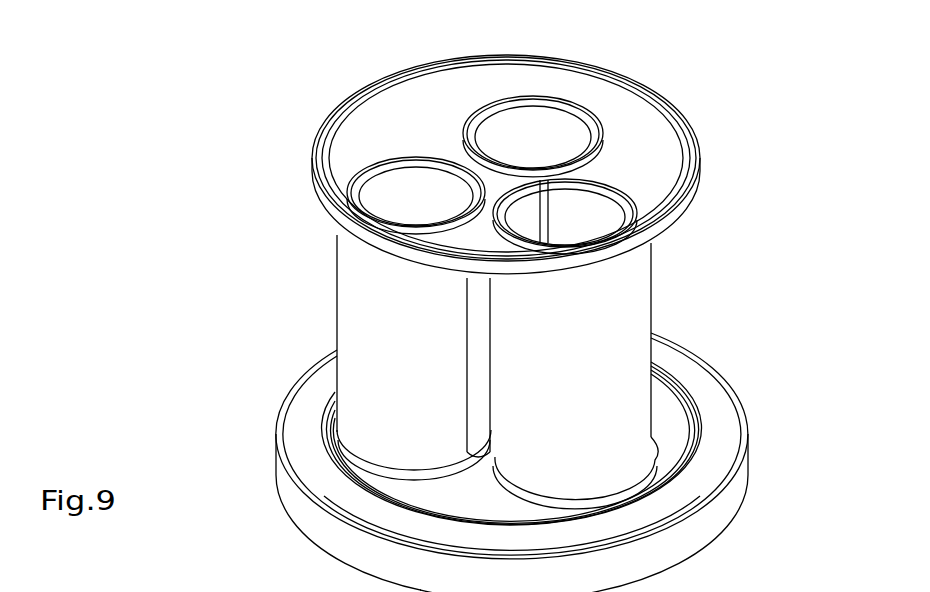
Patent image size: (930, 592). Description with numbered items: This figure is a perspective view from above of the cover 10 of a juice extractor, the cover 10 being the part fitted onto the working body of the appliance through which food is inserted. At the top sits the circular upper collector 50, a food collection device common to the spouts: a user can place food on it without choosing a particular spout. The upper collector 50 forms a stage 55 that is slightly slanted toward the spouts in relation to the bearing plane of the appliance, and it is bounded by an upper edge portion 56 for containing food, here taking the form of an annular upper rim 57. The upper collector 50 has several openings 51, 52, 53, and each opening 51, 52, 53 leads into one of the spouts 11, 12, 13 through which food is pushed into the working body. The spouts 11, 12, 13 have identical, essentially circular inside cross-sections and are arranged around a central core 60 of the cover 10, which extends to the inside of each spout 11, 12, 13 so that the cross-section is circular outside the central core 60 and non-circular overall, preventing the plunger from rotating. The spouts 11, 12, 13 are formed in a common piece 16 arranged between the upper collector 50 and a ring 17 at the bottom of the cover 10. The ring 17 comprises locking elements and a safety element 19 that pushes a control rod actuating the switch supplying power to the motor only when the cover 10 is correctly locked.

The cover 10 is at (267, 405).
The spout 11 is at (520, 132).
The spout 12 is at (583, 222).
The spout 13 is at (387, 205).
The common piece 16 is at (625, 322).
The ring 17 is at (722, 503).
The safety element 19 is at (294, 587).
The upper collector 50 is at (668, 95).
The opening 51 is at (550, 105).
The opening 52 is at (610, 193).
The opening 53 is at (377, 172).
The stage 55 is at (415, 125).
The upper edge portion 56 is at (643, 83).
The annular upper rim 57 is at (673, 208).
The central core 60 is at (522, 224).